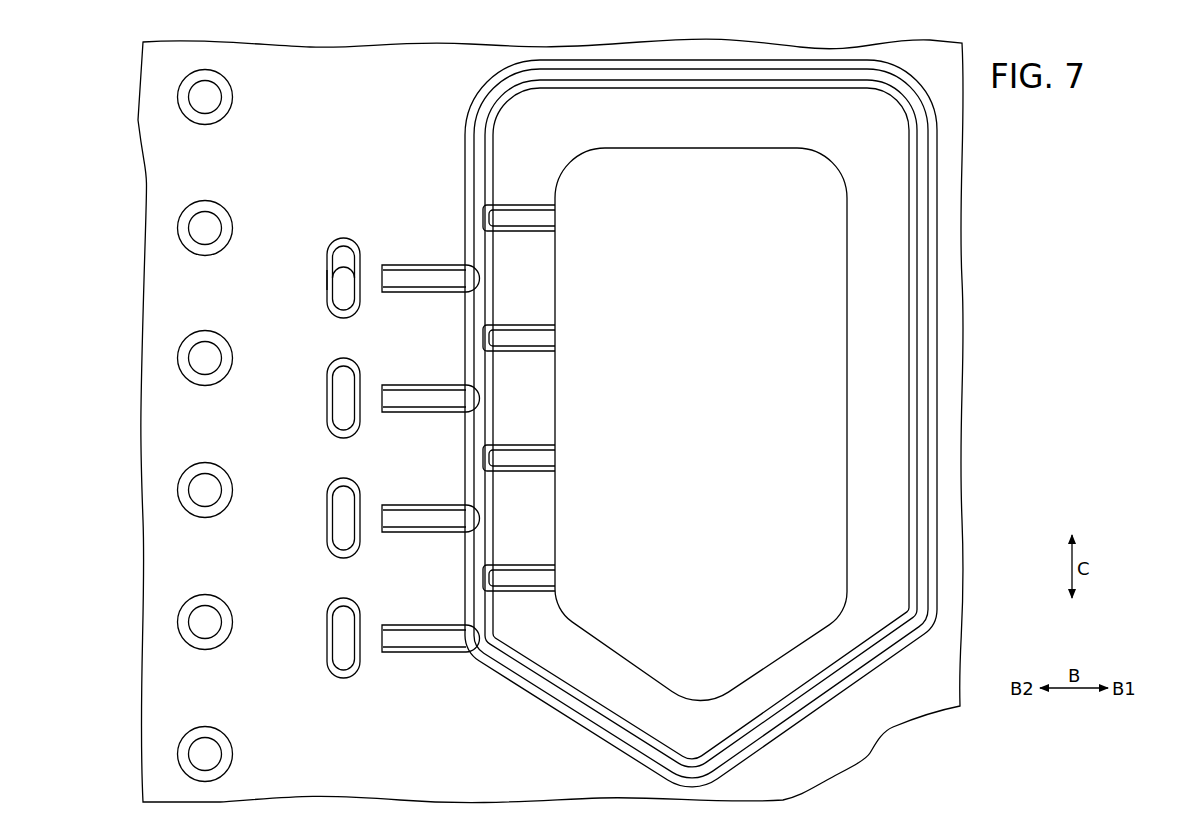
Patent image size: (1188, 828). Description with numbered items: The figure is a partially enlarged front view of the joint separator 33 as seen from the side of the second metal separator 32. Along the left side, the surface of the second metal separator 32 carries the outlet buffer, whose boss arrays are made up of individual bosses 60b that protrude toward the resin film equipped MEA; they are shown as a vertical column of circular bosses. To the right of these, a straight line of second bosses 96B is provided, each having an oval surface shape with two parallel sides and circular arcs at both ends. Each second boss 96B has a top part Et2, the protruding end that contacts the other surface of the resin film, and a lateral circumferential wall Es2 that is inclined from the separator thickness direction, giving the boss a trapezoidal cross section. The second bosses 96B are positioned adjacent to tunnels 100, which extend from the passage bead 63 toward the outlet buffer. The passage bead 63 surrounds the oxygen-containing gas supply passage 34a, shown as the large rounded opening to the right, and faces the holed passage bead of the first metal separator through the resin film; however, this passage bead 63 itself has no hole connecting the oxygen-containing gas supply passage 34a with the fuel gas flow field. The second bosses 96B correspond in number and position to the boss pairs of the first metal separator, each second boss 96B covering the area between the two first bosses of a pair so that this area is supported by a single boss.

The second metal separator 32 is at (172, 62).
The metal plate of separator 33 is at (139, 137).
The bosses 60b is at (203, 233).
The second boss 96B is at (326, 263).
The top part of the second boss Et2 is at (341, 257).
The lateral circumferential wall of the second boss Es2 is at (328, 287).
The tunnels 100 is at (425, 282).
The passage bead 63 is at (478, 492).
The oxygen-containing gas supply passage 34a is at (813, 265).